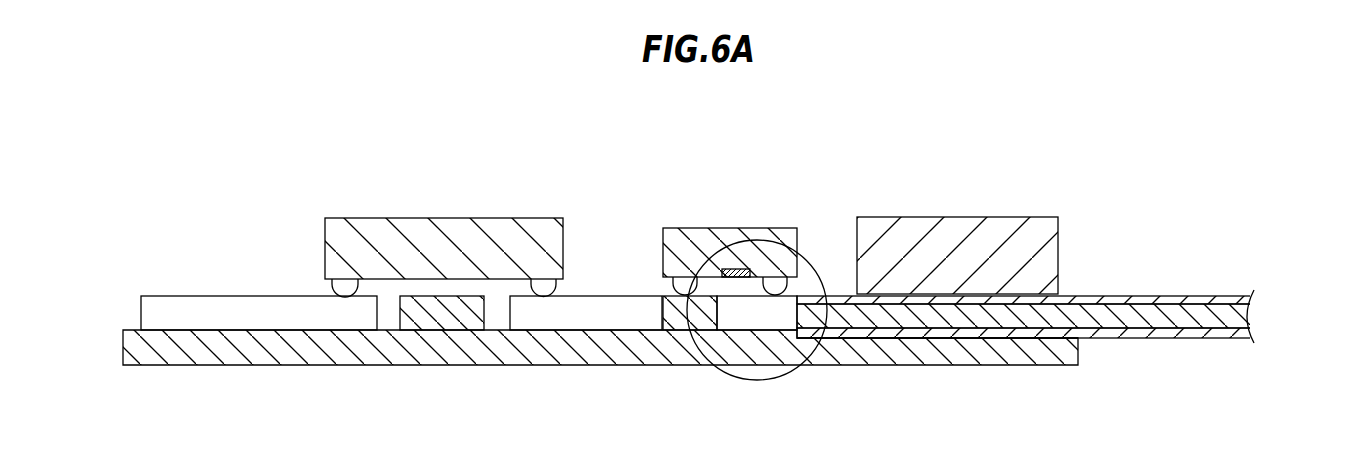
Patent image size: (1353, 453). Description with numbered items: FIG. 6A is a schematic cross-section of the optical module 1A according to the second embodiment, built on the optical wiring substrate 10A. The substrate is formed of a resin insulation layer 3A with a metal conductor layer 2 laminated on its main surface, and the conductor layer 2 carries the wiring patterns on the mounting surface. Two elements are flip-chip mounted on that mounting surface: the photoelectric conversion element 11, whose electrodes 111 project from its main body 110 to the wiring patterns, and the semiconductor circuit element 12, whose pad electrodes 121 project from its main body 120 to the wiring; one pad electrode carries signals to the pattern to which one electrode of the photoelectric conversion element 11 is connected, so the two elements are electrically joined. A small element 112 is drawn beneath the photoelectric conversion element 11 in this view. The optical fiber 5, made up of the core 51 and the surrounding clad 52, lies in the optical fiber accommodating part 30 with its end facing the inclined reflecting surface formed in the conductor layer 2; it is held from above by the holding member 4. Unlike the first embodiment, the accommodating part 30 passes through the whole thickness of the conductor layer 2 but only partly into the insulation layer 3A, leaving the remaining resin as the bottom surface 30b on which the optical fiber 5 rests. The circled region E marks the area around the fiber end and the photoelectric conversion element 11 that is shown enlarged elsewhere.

The optical module 1A is at (183, 148).
The optical wiring substrate 10A is at (97, 310).
The conductor layer 2 is at (227, 305).
The insulation layer 3A is at (223, 348).
The optical fiber accommodating part 30 is at (1082, 340).
The bottom surface 30b is at (948, 337).
The semiconductor circuit element 12 is at (402, 218).
The main body 120 is at (482, 218).
The pad electrode 121 is at (342, 287).
The photoelectric conversion element 11 is at (690, 228).
The main body 110 is at (728, 234).
The electrode 111 is at (685, 282).
The chip element 112 is at (738, 268).
The holding member 4 is at (958, 223).
The optical fiber 5 is at (1313, 293).
The core 51 is at (1245, 309).
The clad 52 is at (1240, 331).
The enlarged region E is at (785, 377).